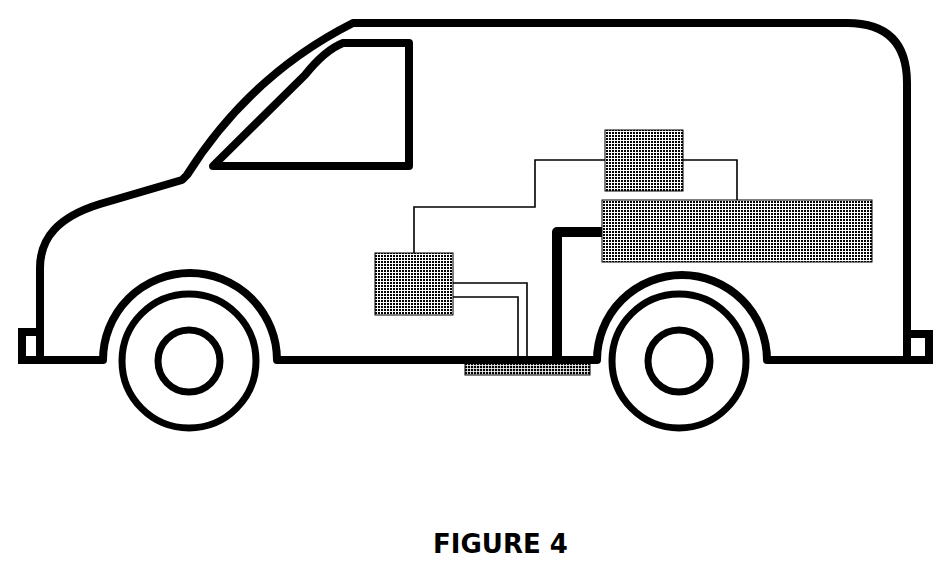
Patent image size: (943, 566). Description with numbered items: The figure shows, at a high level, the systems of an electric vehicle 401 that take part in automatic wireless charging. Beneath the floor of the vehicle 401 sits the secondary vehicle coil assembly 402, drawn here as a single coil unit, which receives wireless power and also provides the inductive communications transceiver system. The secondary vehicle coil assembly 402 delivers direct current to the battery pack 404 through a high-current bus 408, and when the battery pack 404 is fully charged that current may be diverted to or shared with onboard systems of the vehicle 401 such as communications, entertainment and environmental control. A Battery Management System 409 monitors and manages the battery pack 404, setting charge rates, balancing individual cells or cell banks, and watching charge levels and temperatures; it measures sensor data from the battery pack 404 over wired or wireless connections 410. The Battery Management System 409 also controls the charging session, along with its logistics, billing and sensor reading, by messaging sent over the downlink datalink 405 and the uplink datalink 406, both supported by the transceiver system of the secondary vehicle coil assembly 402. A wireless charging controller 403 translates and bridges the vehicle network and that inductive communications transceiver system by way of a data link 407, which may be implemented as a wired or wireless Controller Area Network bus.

The electric vehicle 401 is at (122, 183).
The secondary vehicle coil assembly 402 is at (450, 380).
The wireless charging controller 403 is at (414, 284).
The battery pack 404 is at (737, 231).
The downlink datalink 405 is at (490, 311).
The uplink datalink 406 is at (485, 328).
The data link 407 is at (509, 206).
The high-current bus 408 is at (582, 296).
The Battery Management System 409 is at (644, 160).
The wired connections 410 is at (711, 168).